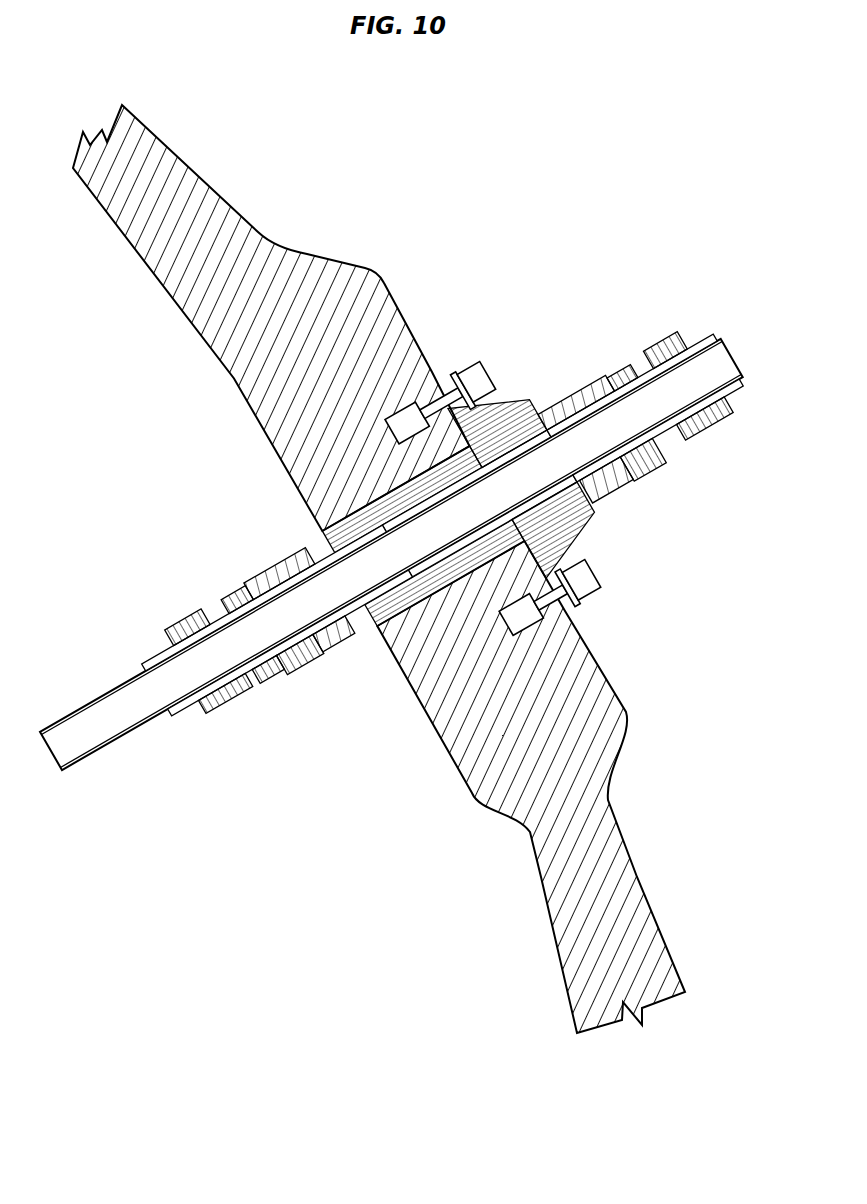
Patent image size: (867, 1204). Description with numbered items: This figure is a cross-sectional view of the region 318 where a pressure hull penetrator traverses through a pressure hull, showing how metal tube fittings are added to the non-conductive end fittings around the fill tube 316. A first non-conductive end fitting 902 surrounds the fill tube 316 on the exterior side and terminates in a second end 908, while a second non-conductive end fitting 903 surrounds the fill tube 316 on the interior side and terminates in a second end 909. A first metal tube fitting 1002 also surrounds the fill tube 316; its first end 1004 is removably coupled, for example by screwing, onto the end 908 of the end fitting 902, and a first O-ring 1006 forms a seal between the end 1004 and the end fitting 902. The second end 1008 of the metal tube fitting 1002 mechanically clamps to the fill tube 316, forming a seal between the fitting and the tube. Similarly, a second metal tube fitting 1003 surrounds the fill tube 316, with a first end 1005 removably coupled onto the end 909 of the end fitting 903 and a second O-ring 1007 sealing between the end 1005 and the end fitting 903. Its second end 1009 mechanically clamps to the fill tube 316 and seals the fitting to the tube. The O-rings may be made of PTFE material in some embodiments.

The fill tube 316 is at (93, 758).
The region 318 is at (535, 125).
The first non-conductive end fitting 902 is at (561, 397).
The second non-conductive end fitting 903 is at (278, 560).
The second end 908 is at (640, 491).
The second end 909 is at (324, 674).
The first metal tube fitting 1002 is at (667, 338).
The second metal tube fitting 1003 is at (180, 618).
The first end 1004 is at (613, 484).
The first end 1005 is at (292, 686).
The first O-ring 1006 is at (612, 378).
The second O-ring 1007 is at (243, 596).
The second end 1008 is at (710, 326).
The second end 1009 is at (135, 648).